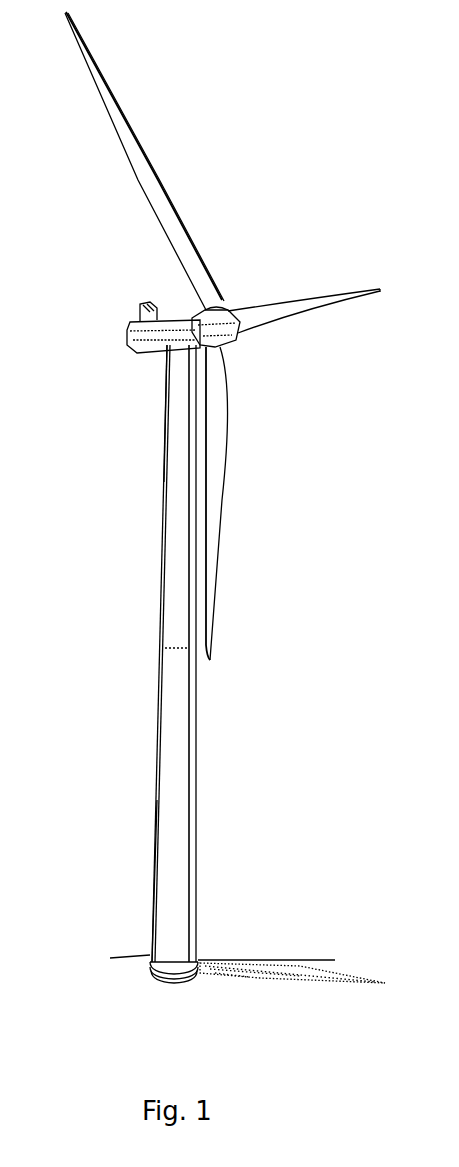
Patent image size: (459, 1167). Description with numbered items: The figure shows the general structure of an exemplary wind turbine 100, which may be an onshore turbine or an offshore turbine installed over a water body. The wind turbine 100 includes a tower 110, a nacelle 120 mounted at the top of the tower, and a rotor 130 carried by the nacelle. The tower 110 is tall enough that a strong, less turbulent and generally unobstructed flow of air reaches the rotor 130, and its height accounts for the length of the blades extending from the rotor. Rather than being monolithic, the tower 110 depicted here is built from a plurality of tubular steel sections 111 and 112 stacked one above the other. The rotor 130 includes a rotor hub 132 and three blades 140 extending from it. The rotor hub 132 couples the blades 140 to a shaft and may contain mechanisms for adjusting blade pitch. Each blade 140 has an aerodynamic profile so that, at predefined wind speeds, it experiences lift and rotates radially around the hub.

The wind turbine 100 is at (326, 205).
The tower 110 is at (161, 540).
The tubular steel section 111 is at (158, 798).
The tubular steel section 112 is at (166, 482).
The nacelle 120 is at (122, 332).
The rotor 130 is at (230, 340).
The rotor hub 132 is at (220, 308).
The blade 140 is at (95, 85).